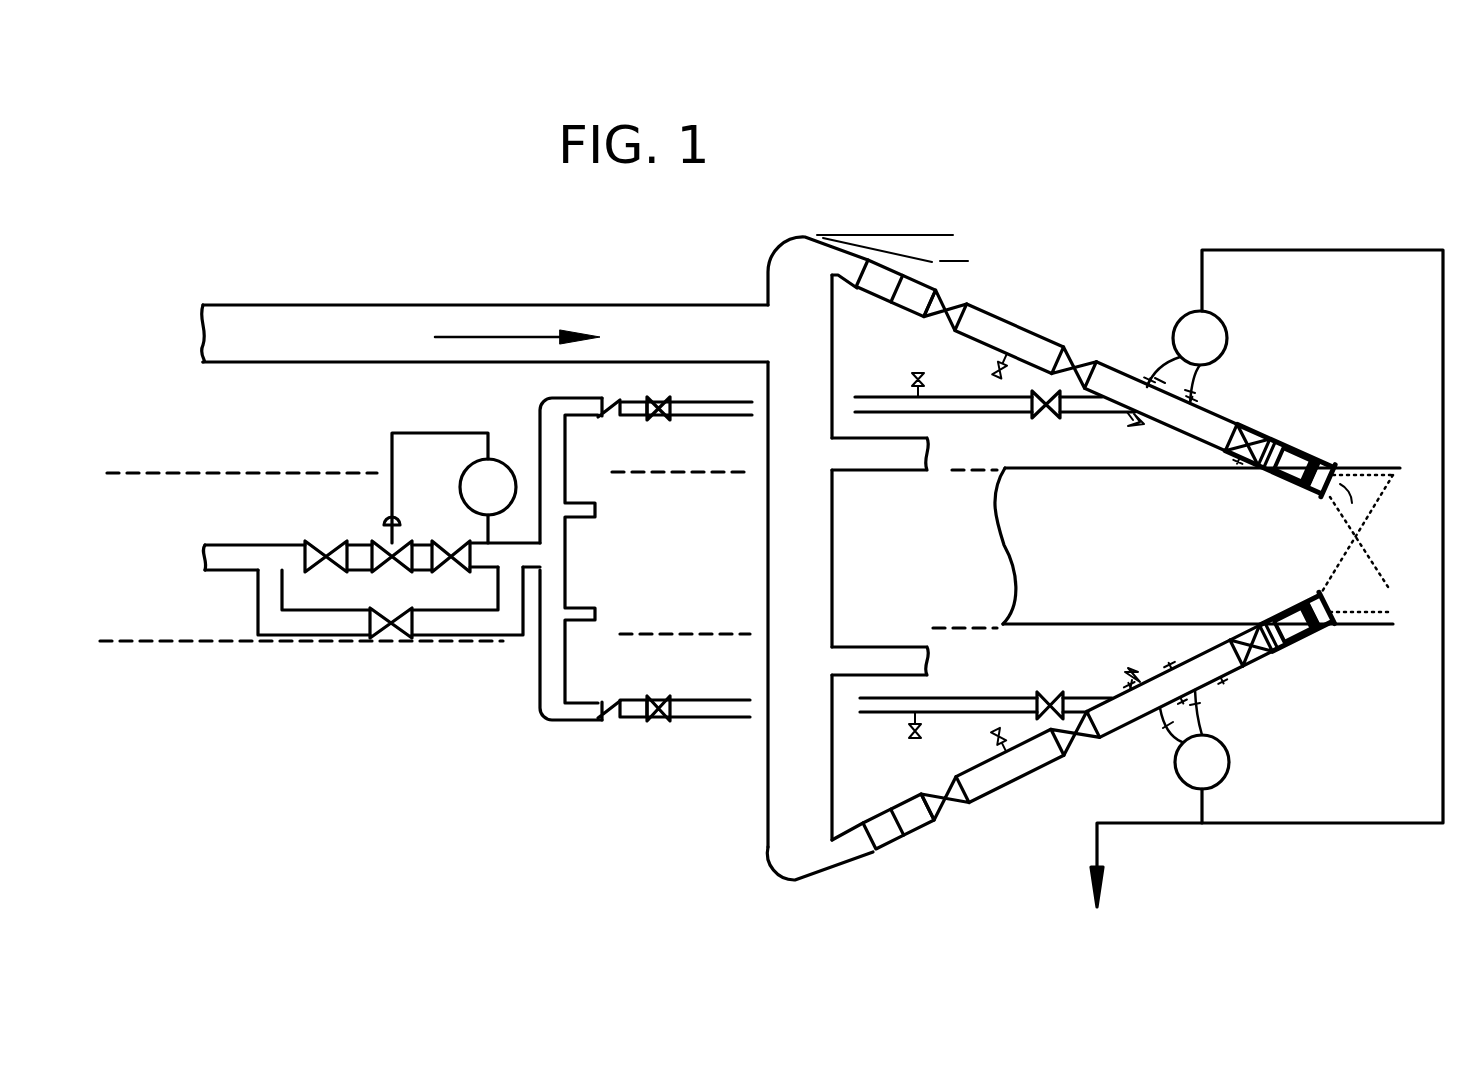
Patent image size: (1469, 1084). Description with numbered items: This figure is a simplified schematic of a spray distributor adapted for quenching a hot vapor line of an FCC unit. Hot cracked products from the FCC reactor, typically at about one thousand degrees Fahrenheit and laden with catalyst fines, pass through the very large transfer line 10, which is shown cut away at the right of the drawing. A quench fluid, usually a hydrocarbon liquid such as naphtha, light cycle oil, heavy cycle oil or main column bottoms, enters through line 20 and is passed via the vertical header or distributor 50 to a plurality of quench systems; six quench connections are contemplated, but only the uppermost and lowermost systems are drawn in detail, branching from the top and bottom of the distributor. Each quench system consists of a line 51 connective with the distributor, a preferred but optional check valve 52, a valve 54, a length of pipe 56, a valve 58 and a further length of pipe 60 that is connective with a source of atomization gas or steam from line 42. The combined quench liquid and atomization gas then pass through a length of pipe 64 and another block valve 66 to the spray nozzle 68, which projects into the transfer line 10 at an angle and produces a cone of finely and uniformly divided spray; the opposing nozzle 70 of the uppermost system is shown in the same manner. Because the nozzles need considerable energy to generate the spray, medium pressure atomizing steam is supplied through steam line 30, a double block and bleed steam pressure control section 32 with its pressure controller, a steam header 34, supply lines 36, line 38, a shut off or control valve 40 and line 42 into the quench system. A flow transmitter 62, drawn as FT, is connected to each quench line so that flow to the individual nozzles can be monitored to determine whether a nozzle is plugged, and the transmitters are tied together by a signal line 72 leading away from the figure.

The transfer line 10 is at (1090, 470).
The line 20 is at (455, 305).
The steam line 30 is at (272, 545).
The double block and bleed steam pressure control section 32 is at (400, 432).
The steam header 34 is at (566, 455).
The supply lines 36 is at (660, 402).
The line 38 is at (937, 697).
The shut off or control valve 40 is at (1048, 697).
The line 42 is at (1078, 690).
The distributor 50 is at (833, 560).
The line 51 is at (818, 240).
The check valve 52 is at (885, 843).
The valve 54 is at (955, 805).
The length of pipe 56 is at (1005, 788).
The valve 58 is at (1087, 742).
The length of pipe 60 is at (1120, 727).
The flow transmitter 62 is at (1222, 325).
The length of pipe 64 is at (1195, 690).
The block valve 66 is at (1262, 652).
The spray nozzle 68 is at (1330, 622).
The injection nozzle 70 is at (1362, 470).
The signal line 72 is at (1150, 825).